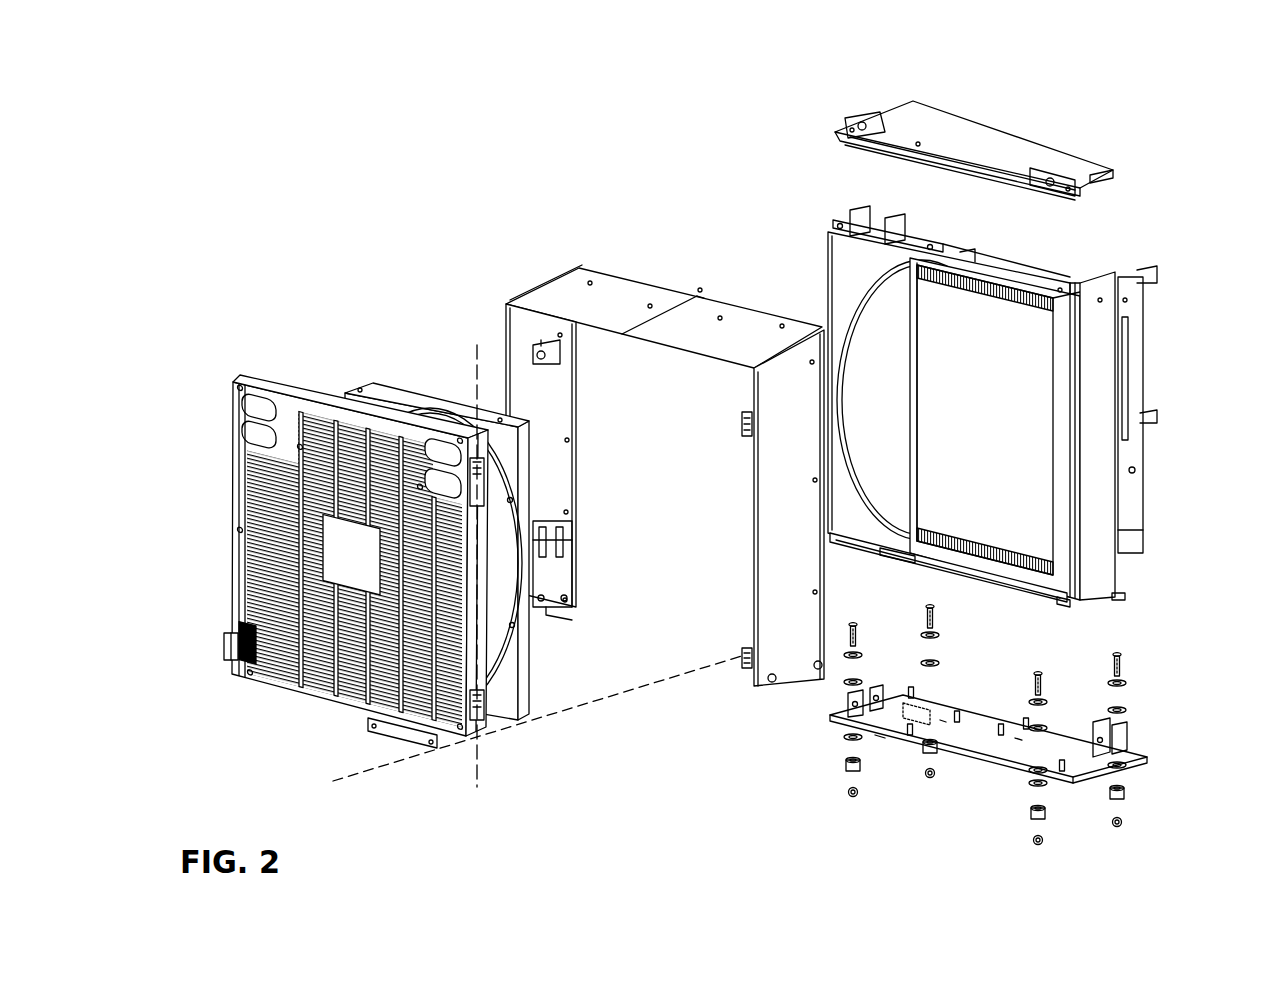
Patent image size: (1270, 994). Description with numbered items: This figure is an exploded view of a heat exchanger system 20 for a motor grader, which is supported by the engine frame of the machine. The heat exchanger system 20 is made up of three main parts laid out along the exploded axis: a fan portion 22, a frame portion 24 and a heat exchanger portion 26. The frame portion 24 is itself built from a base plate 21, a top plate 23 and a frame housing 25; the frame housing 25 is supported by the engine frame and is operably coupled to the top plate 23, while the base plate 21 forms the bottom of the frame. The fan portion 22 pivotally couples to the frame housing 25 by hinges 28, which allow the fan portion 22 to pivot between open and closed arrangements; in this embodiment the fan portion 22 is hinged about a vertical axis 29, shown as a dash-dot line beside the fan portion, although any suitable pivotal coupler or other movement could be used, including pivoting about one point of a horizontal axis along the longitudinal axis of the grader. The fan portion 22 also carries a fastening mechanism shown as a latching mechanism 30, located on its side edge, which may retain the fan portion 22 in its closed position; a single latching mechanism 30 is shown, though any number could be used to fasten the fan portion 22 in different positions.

The heat exchanger system 20 is at (285, 163).
The base plate 21 is at (953, 708).
The fan portion 22 is at (223, 340).
The top plate 23 is at (967, 126).
The frame portion 24 is at (612, 263).
The frame housing 25 is at (658, 287).
The heat exchanger portion 26 is at (1186, 354).
The hinges 28 is at (483, 472).
The vertical axis 29 is at (477, 393).
The latching mechanism 30 is at (224, 651).